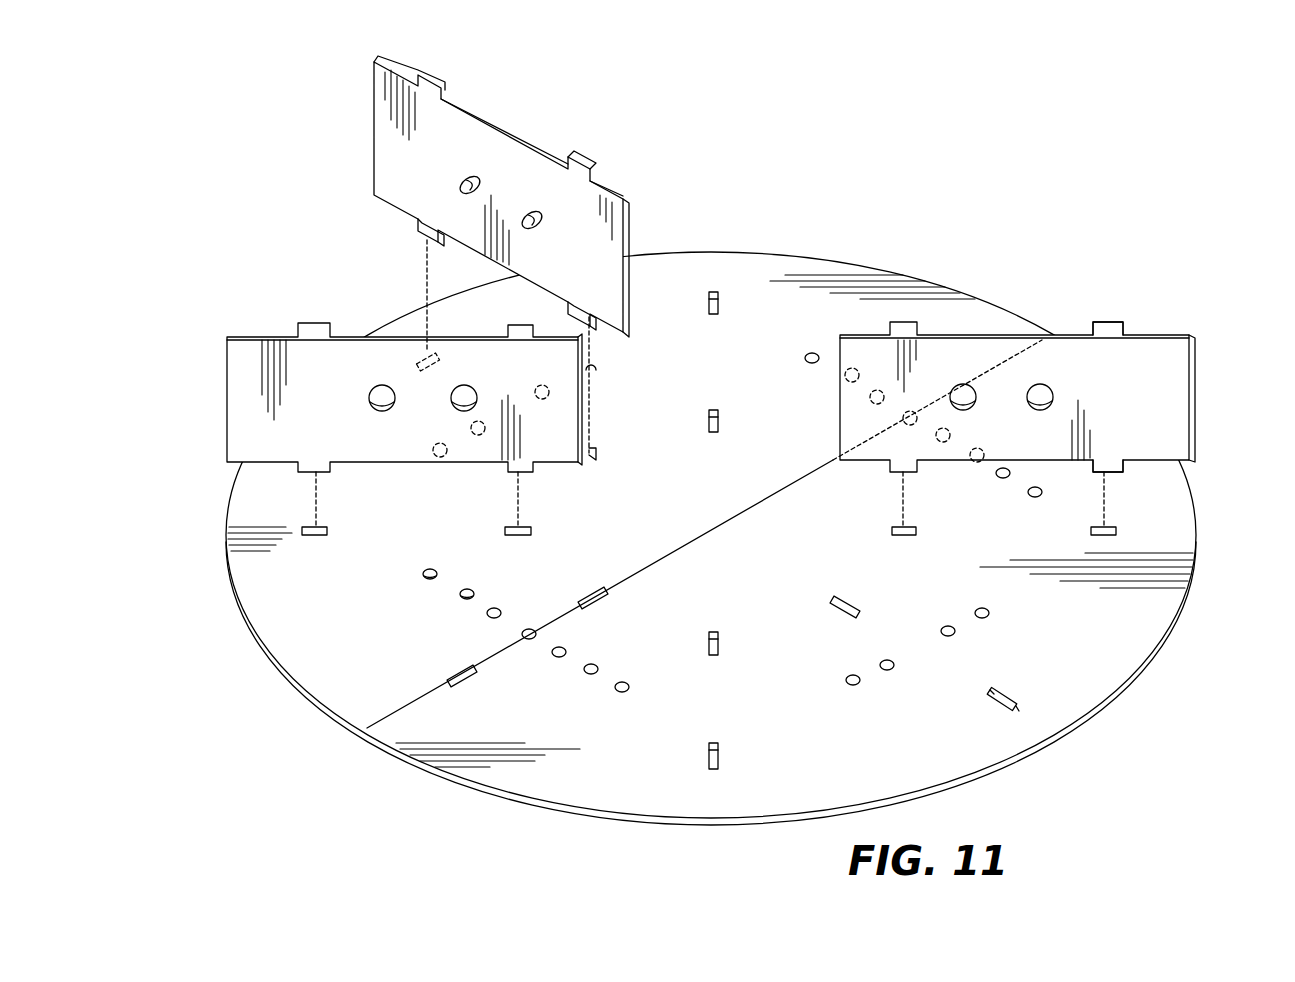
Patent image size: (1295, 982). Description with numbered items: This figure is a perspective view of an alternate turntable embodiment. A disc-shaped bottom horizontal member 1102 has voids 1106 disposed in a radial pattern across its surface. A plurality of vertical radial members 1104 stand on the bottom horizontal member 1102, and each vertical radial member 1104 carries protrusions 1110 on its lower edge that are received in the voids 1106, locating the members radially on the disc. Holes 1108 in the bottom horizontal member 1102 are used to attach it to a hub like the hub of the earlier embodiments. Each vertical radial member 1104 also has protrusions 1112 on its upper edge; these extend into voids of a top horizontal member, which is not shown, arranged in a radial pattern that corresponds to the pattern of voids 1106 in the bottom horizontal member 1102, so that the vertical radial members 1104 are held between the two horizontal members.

The bottom horizontal member 1102 is at (1088, 648).
The vertical radial member 1104 is at (1055, 398).
The void 1106 is at (900, 527).
The hole 1108 is at (465, 597).
The protrusion 1110 is at (1117, 473).
The protrusion 1112 is at (1110, 322).